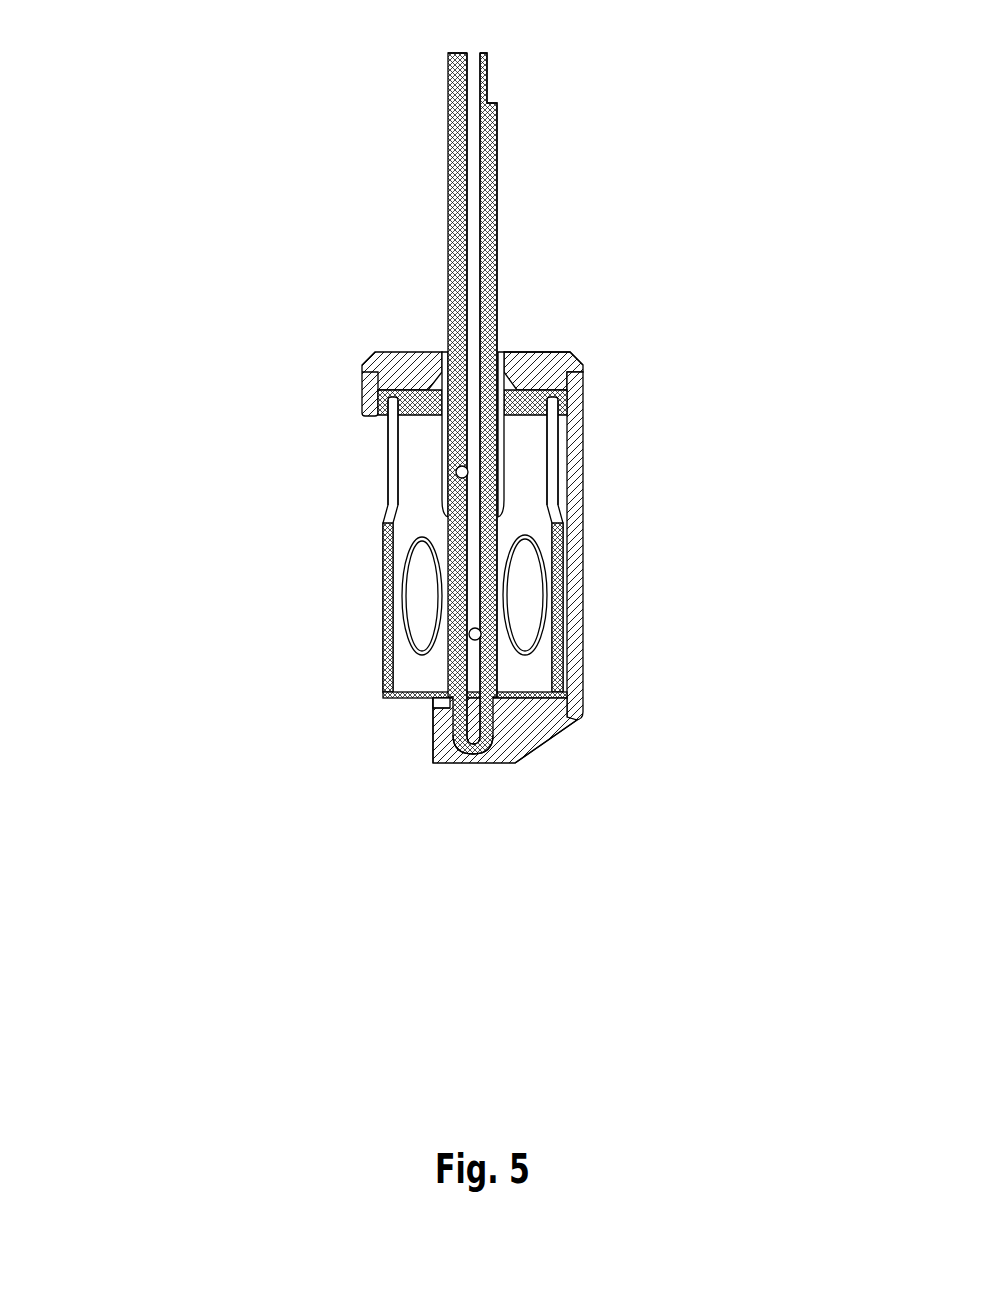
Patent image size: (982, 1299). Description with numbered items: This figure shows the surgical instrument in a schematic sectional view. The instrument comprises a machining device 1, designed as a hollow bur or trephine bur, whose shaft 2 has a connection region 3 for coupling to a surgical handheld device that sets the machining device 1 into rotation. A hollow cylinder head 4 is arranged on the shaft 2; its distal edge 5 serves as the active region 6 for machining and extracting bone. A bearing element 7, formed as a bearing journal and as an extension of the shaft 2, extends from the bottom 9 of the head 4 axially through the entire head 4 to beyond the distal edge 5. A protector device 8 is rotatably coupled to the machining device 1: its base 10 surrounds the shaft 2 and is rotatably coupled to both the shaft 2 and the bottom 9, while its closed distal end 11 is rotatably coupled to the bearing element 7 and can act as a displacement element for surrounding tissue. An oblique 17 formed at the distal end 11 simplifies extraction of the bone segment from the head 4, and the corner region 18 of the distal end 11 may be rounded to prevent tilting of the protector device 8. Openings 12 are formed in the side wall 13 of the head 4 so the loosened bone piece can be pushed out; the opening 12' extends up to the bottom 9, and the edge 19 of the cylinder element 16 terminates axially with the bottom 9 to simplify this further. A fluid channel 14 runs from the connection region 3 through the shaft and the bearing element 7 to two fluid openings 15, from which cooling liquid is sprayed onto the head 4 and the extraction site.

The machining device 1 is at (487, 147).
The shaft 2 is at (490, 226).
The connection region 3 is at (458, 80).
The head 4 is at (385, 582).
The distal edge 5 is at (383, 694).
The active region 6 is at (425, 696).
The bearing element 7 is at (583, 720).
The protector device 8 is at (393, 352).
The bottom 9 is at (532, 400).
The base 10 is at (508, 351).
The distal end 11 is at (528, 742).
The openings 12 is at (570, 582).
The opening 12' is at (238, 418).
The side wall 13 is at (537, 663).
The fluid channel 14 is at (476, 92).
The fluid openings 15 is at (456, 472).
The cylinder element 16 is at (578, 428).
The oblique 17 is at (450, 757).
The corner region 18 is at (452, 728).
The edge 19 is at (367, 376).